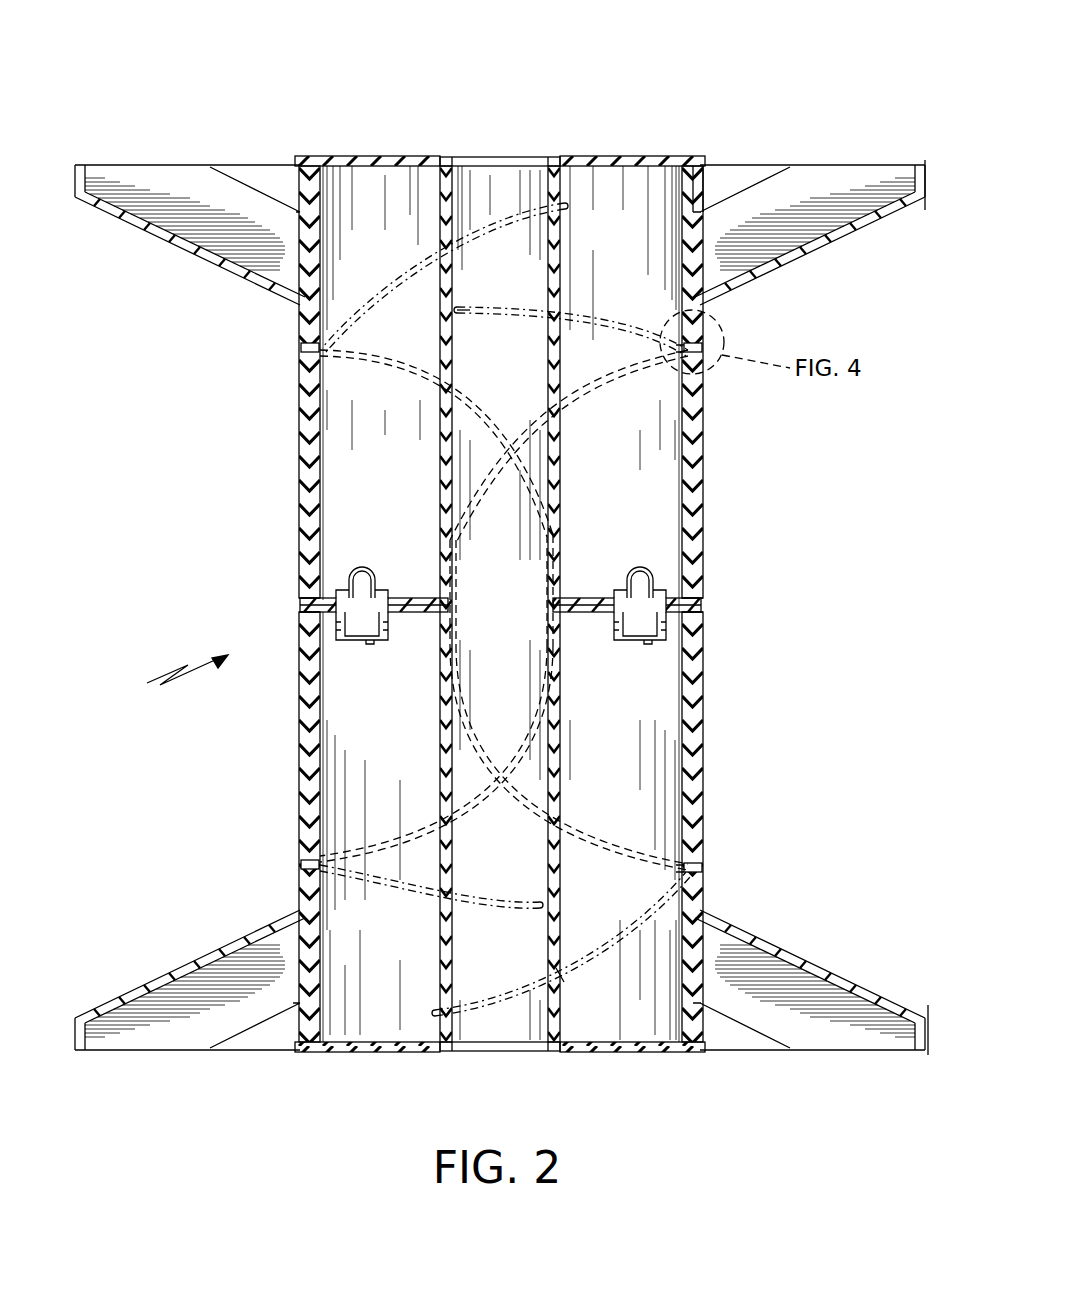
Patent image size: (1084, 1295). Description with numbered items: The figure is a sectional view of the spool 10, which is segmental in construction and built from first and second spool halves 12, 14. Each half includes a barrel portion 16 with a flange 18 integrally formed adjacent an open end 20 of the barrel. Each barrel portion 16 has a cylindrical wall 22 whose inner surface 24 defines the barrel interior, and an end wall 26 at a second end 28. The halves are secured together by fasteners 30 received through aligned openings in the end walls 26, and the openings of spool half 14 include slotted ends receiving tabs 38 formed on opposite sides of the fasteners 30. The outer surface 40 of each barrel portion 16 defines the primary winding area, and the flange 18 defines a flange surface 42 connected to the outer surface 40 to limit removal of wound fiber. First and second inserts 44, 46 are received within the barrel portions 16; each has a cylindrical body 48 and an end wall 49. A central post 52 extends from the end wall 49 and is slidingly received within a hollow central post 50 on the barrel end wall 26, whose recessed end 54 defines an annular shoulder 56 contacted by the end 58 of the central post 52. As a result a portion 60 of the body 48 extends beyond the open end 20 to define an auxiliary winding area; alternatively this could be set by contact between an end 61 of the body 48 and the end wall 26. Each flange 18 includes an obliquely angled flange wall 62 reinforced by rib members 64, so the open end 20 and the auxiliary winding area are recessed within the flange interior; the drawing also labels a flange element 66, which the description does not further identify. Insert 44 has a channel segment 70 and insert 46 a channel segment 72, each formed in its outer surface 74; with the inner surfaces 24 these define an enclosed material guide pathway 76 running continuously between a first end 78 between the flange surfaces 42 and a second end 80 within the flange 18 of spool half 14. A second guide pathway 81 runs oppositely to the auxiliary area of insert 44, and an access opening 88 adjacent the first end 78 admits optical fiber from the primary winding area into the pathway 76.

The spool 10 is at (170, 675).
The first spool half 12 is at (300, 405).
The second spool half 14 is at (300, 800).
The barrel portion 16 is at (700, 490).
The flange 18 is at (935, 180).
The open end 20 is at (700, 185).
The cylindrical wall 22 is at (700, 533).
The inner surface 24 is at (317, 472).
The end wall 26 is at (447, 597).
The second end 28 is at (395, 597).
The fasteners 30 is at (360, 645).
The tabs 38 is at (348, 562).
The outer surface 40 is at (300, 340).
The flange surface 42 is at (837, 240).
The first insert 44 is at (605, 156).
The second insert 46 is at (395, 1054).
The cylindrical body 48 is at (328, 266).
The end wall 49 is at (375, 157).
The central post 50 is at (560, 417).
The central post 52 is at (545, 222).
The recessed end 54 is at (568, 228).
The annular shoulder 56 is at (547, 255).
The end 58 is at (452, 258).
The extending portion 60 is at (275, 163).
The end 61 is at (300, 603).
The flange wall 62 is at (887, 223).
The rib members 64 is at (845, 185).
The flange 66 is at (812, 165).
The channel segment 70 is at (684, 377).
The channel segment 72 is at (688, 875).
The outer surface 74 is at (700, 462).
The material guide pathway 76 is at (690, 345).
The first end 78 is at (526, 315).
The second end 80 is at (503, 993).
The guide pathway 81 is at (366, 358).
The access opening 88 is at (470, 314).